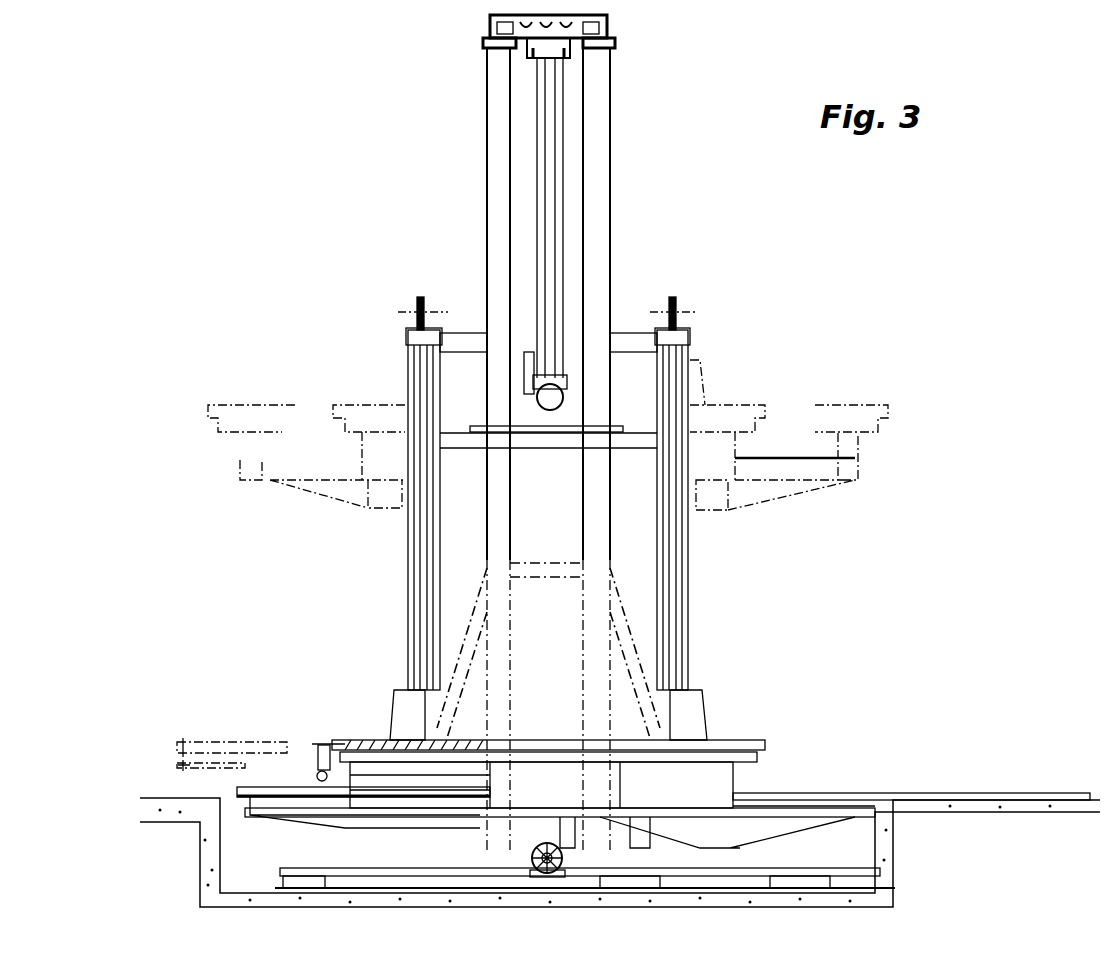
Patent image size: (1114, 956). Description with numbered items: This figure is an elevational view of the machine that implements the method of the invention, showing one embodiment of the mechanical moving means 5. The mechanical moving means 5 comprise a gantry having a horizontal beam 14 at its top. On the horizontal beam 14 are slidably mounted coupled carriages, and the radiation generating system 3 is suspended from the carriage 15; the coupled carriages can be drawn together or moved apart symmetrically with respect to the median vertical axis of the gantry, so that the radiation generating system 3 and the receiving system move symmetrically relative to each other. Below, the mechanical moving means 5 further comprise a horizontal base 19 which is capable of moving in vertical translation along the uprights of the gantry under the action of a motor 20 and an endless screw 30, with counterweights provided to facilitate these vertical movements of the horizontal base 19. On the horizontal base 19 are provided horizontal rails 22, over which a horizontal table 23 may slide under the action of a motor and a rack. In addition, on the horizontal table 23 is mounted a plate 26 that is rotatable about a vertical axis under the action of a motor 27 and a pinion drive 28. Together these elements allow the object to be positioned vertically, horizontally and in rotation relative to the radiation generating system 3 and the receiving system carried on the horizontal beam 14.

The radiation generating system 3 is at (564, 397).
The mechanical moving means 5 is at (680, 177).
The horizontal beam 14 is at (604, 30).
The carriage 15 is at (540, 52).
The horizontal base 19 is at (345, 805).
The motor 20 is at (553, 840).
The horizontal rails 22 is at (785, 810).
The horizontal table 23 is at (712, 785).
The plate 26 is at (527, 745).
The motor 27 is at (316, 776).
The pinion drive 28 is at (322, 745).
The endless screw 30 is at (435, 616).